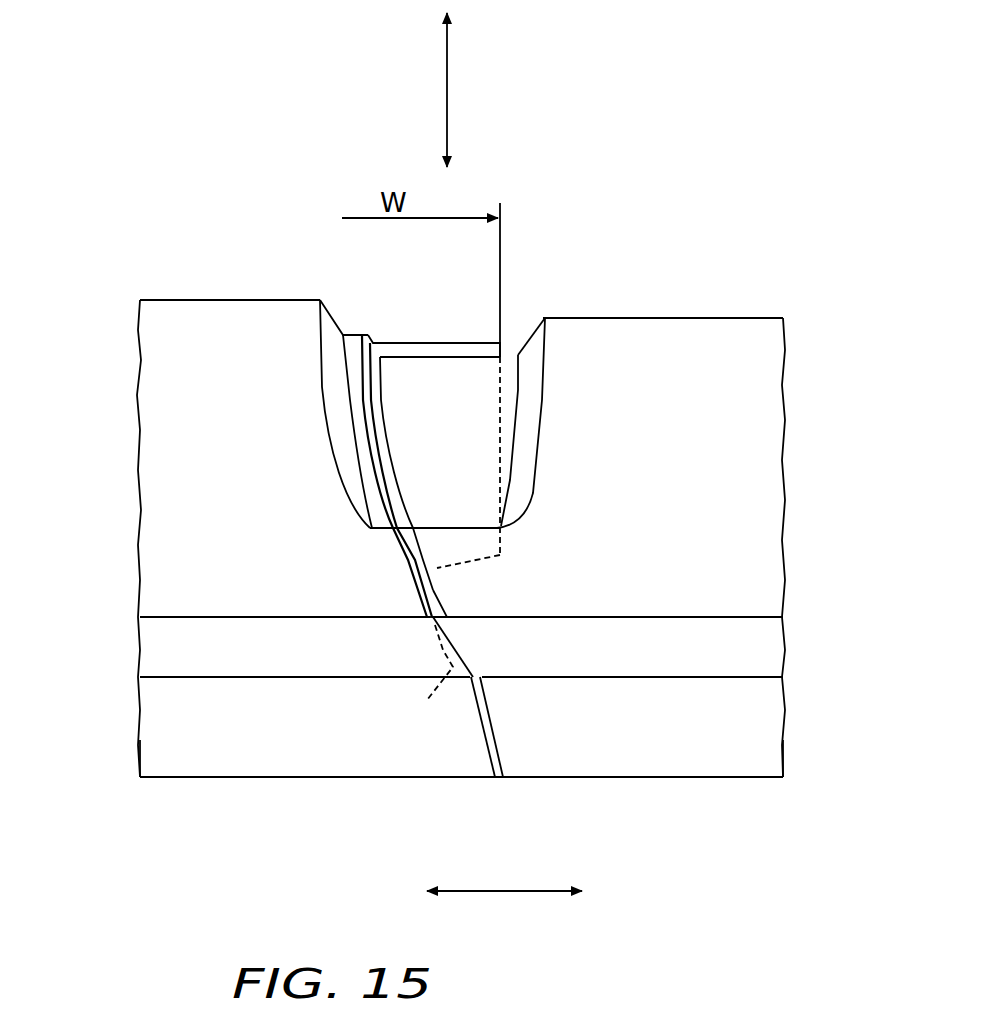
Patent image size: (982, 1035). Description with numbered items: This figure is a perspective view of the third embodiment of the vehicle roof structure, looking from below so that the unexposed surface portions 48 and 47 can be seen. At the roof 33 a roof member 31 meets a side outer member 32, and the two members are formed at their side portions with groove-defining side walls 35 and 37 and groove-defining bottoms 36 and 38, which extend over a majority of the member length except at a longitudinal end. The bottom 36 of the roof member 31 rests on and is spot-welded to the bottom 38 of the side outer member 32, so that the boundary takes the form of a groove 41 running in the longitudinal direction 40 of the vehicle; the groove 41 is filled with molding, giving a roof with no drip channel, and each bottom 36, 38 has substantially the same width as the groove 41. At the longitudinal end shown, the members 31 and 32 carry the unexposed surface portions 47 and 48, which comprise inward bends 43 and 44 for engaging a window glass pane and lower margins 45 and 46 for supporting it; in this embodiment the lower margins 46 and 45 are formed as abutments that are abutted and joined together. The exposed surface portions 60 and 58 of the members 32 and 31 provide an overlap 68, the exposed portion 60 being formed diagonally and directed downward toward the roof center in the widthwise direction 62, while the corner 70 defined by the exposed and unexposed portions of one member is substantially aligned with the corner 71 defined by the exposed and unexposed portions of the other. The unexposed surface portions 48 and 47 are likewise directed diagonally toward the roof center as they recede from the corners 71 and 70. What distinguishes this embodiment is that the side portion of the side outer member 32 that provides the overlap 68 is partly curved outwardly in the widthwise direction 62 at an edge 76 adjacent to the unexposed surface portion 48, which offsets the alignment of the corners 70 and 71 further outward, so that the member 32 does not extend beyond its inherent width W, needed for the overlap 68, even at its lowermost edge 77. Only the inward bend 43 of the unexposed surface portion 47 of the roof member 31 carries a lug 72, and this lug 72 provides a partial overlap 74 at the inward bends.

The roof member 31 is at (702, 345).
The side outer member 32 is at (203, 328).
The roof 33 is at (683, 210).
The groove-defining side wall 35 is at (527, 345).
The groove-defining bottom 36 is at (475, 360).
The groove-defining side wall 37 is at (328, 335).
The groove-defining bottom 38 is at (390, 340).
The longitudinal direction 40 is at (447, 90).
The groove 41 is at (428, 350).
The inward bend 43 is at (758, 653).
The inward bend 44 is at (152, 658).
The lower margin 45 is at (758, 711).
The lower margin 46 is at (152, 717).
The unexposed surface portion 47 is at (840, 645).
The unexposed surface portion 48 is at (78, 652).
The exposed surface portion 58 is at (263, 555).
The exposed surface portion 60 is at (613, 553).
The widthwise direction 62 is at (505, 891).
The overlap 68 is at (473, 460).
The corner 70 is at (450, 619).
The corner 71 is at (430, 618).
The lug 72 is at (426, 675).
The partial overlap 74 is at (500, 667).
The edge 76 is at (465, 560).
The lowermost edge 77 is at (495, 777).